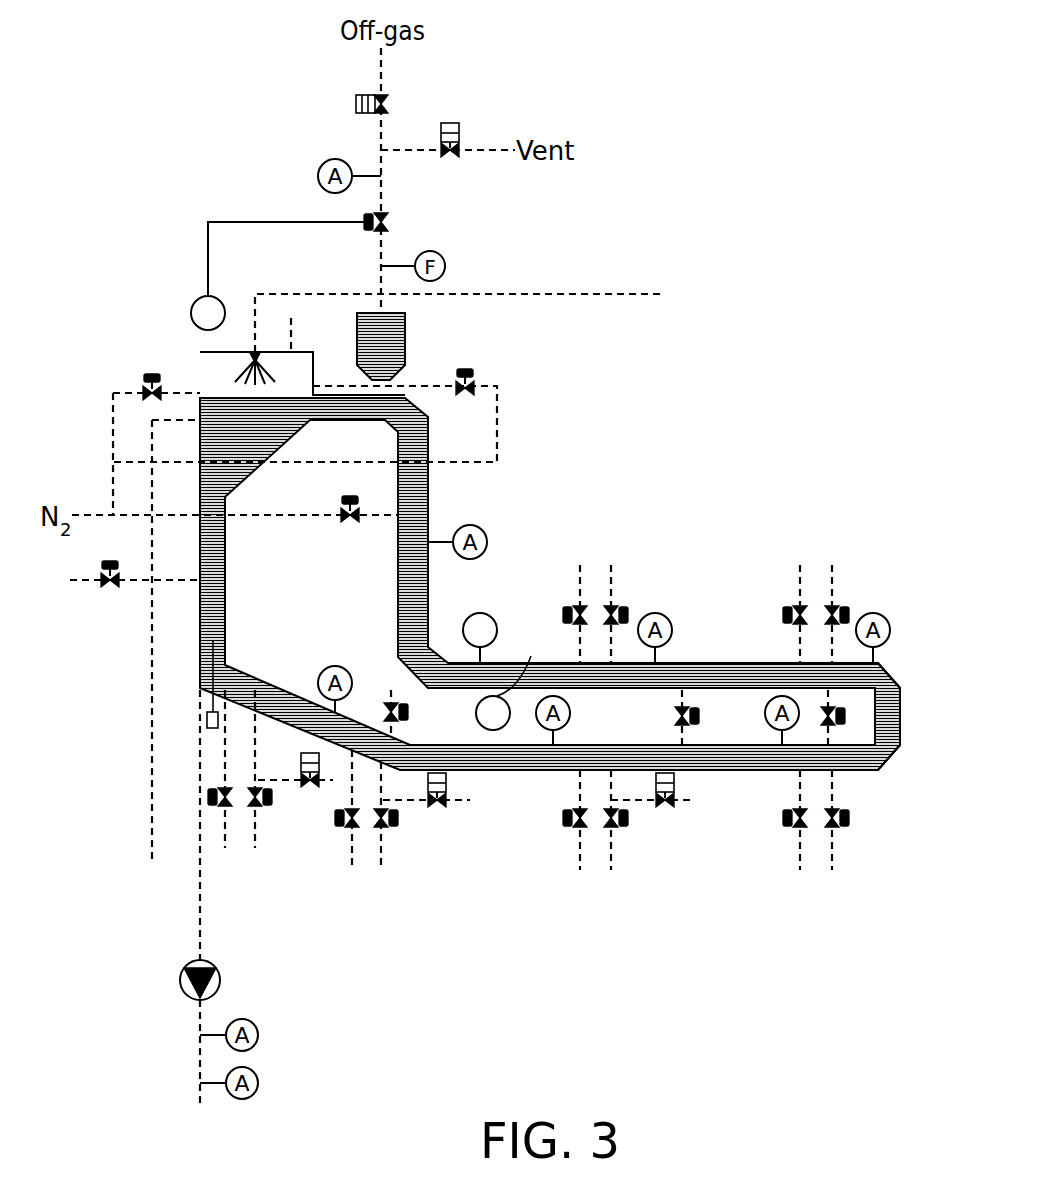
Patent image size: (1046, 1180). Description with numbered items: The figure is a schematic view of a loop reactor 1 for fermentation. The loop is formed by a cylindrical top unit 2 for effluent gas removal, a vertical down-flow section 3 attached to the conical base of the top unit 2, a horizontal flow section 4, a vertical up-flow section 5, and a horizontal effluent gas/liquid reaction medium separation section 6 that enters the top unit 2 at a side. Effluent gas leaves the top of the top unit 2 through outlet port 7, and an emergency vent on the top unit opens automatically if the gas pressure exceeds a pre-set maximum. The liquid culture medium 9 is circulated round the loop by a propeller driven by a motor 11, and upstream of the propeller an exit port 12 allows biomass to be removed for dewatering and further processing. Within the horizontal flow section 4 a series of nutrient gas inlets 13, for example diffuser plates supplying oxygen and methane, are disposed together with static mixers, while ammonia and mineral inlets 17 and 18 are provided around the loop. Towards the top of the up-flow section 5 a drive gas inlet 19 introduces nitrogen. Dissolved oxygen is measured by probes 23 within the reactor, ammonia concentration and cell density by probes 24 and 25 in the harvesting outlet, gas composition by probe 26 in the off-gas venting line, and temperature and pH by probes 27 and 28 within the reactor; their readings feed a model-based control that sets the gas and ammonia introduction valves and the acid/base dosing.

The loop reactor 1 is at (512, 504).
The top unit 2 is at (200, 357).
The vertical down-flow section 3 is at (165, 637).
The horizontal flow section 4 is at (745, 663).
The vertical up-flow section 5 is at (428, 490).
The horizontal effluent gas/liquid reaction medium separation section 6 is at (402, 388).
The outlet port 7 is at (208, 280).
The liquid culture medium 9 is at (547, 770).
The motor 11 is at (205, 724).
The exit port 12 is at (198, 689).
The nutrient gas inlets 13 is at (68, 595).
The ammonia inlet 17 is at (391, 690).
The mineral inlet 18 is at (676, 717).
The drive gas inlet 19 is at (352, 525).
The dissolved oxygen probes 23 is at (325, 668).
The ammonia concentration probe 24 is at (242, 1018).
The cell density probe 25 is at (242, 1100).
The gas composition probe 26 is at (318, 177).
The temperature probe 27 is at (494, 620).
The pH probe 28 is at (503, 730).